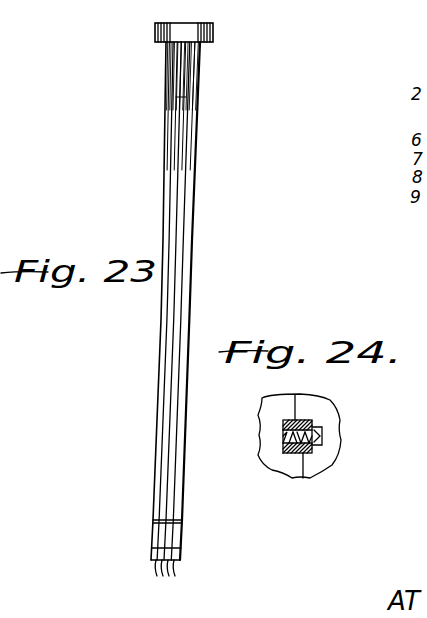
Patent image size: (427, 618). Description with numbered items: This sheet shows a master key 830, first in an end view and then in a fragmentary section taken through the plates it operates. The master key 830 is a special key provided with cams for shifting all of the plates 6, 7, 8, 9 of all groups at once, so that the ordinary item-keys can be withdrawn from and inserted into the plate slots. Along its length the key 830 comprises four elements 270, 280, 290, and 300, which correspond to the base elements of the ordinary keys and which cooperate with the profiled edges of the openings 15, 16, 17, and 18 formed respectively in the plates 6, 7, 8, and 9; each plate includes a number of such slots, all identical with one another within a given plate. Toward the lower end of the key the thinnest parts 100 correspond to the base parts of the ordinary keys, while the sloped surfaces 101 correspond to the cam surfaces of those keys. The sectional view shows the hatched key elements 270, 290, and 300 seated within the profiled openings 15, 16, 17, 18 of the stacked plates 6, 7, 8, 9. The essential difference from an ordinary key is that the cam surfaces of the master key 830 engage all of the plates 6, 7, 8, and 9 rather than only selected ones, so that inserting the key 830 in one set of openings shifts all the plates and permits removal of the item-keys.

In FIG. 23, the master key 830 is at (167, 81).
In FIG. 23, the key element 270 is at (194, 166).
In FIG. 24, the key element 270 is at (318, 428).
In FIG. 23, the key element 280 is at (183, 208).
In FIG. 23, the key element 290 is at (175, 245).
In FIG. 24, the key element 290 is at (320, 441).
In FIG. 23, the key element 300 is at (164, 300).
In FIG. 24, the key element 300 is at (306, 478).
In FIG. 23, the sloped surfaces 101 is at (156, 537).
In FIG. 23, the thinnest parts 100 is at (128, 593).
In FIG. 24, the slot 15 is at (276, 437).
In FIG. 24, the slot 16 is at (276, 437).
In FIG. 24, the slot 17 is at (276, 437).
In FIG. 24, the slot 18 is at (276, 437).
In FIG. 24, the plate 6 is at (276, 437).
In FIG. 24, the plate 7 is at (276, 437).
In FIG. 24, the plate 8 is at (276, 437).
In FIG. 24, the plate 9 is at (280, 481).